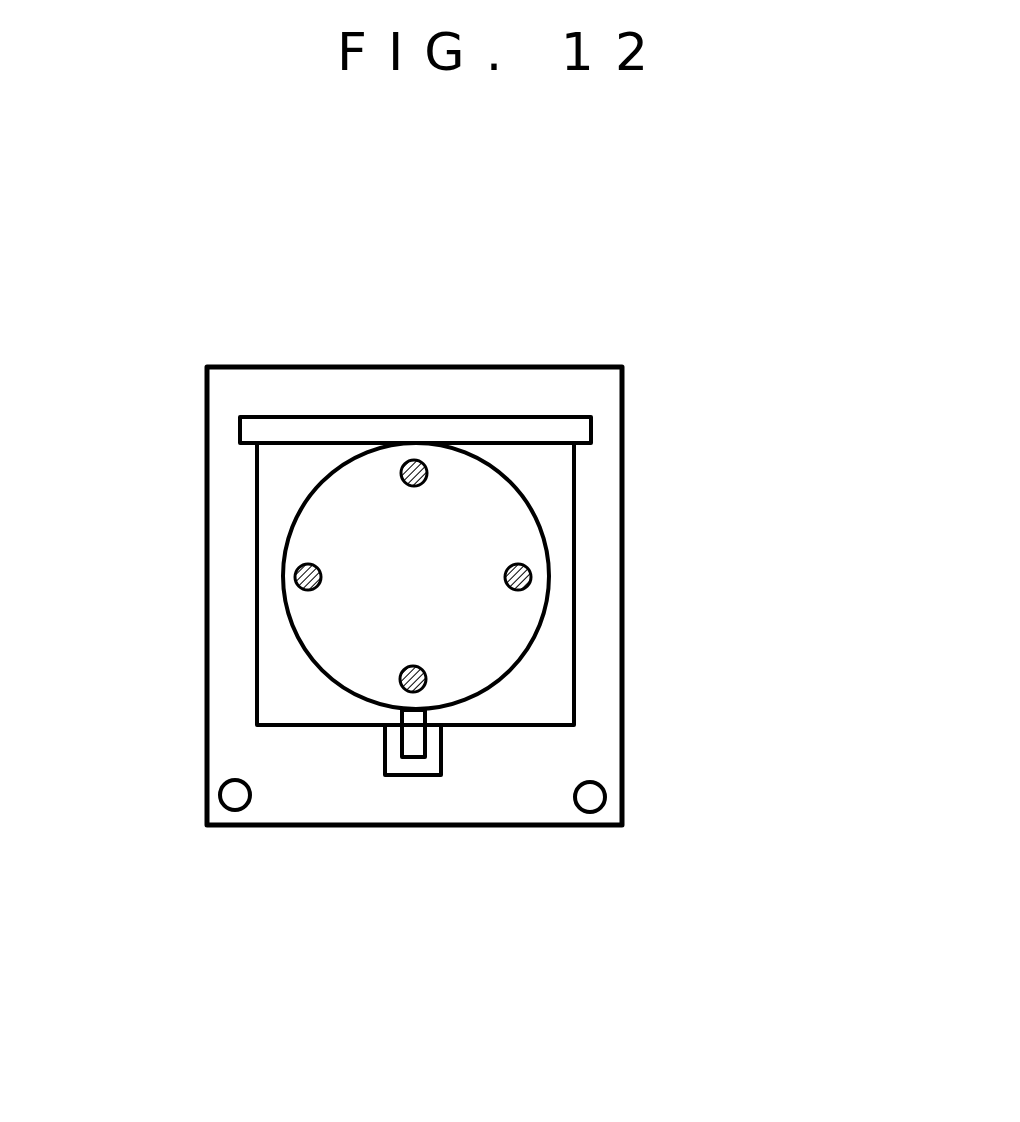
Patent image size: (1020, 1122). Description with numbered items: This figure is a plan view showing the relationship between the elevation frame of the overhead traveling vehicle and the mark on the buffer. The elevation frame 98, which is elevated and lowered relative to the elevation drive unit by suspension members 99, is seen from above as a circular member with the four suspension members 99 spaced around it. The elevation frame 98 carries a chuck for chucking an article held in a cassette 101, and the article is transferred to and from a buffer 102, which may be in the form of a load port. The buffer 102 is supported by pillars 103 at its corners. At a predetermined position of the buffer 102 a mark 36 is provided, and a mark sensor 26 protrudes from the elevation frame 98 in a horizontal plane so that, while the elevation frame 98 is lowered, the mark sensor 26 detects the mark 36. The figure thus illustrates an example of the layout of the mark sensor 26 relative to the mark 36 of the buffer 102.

The elevation frame 98 is at (310, 532).
The suspension members 99 is at (414, 487).
The cassette 101 is at (552, 485).
The buffer 102 is at (625, 560).
The mark sensor 26 is at (414, 720).
The mark 36 is at (441, 750).
The pillar 103 is at (237, 810).